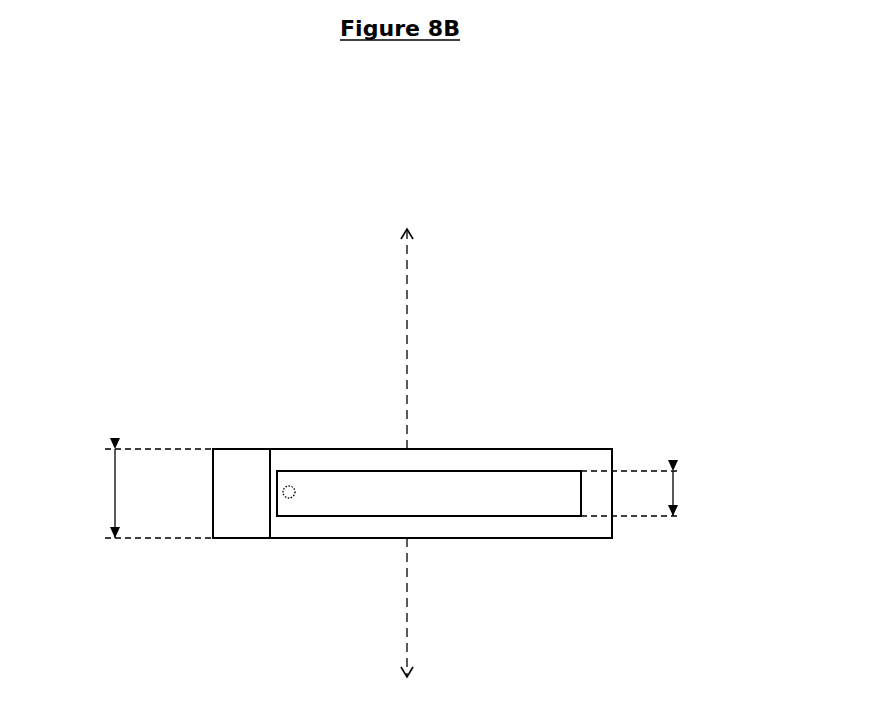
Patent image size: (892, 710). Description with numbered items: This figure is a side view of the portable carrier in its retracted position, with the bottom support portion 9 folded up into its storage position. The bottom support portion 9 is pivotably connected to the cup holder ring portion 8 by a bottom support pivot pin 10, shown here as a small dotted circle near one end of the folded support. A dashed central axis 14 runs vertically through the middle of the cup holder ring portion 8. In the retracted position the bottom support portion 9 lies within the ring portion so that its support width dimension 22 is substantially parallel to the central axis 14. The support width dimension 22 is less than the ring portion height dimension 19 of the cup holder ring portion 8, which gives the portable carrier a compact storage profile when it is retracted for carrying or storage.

The cup holder ring portion 8 is at (557, 449).
The bottom support portion 9 is at (558, 500).
The bottom support pivot pin 10 is at (291, 499).
The central axis 14 is at (421, 260).
The ring portion height dimension 19 is at (115, 490).
The support width dimension 22 is at (673, 492).